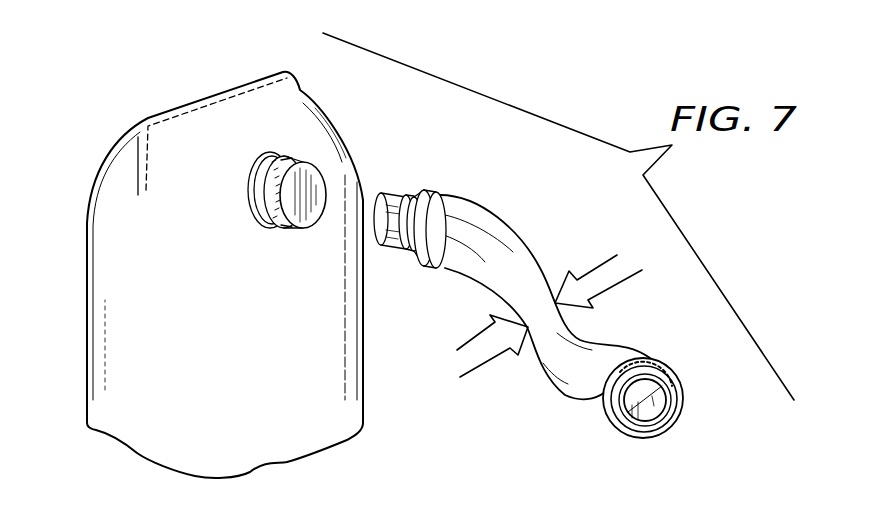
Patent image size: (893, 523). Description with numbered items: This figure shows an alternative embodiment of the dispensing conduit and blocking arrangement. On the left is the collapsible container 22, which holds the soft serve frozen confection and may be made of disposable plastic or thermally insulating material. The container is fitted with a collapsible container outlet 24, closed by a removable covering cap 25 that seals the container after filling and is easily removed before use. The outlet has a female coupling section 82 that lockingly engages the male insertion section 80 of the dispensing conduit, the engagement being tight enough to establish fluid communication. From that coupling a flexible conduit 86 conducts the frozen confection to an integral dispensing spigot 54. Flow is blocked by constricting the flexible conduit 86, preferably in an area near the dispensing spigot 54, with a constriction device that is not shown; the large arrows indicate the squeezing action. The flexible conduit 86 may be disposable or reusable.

The collapsible container 22 is at (102, 240).
The collapsible container outlet 24 is at (262, 192).
The removable covering cap 25 is at (312, 173).
The female coupling section 82 is at (273, 197).
The male insertion section 80 is at (403, 203).
The flexible conduit 86 is at (497, 247).
The dispensing spigot 54 is at (658, 387).